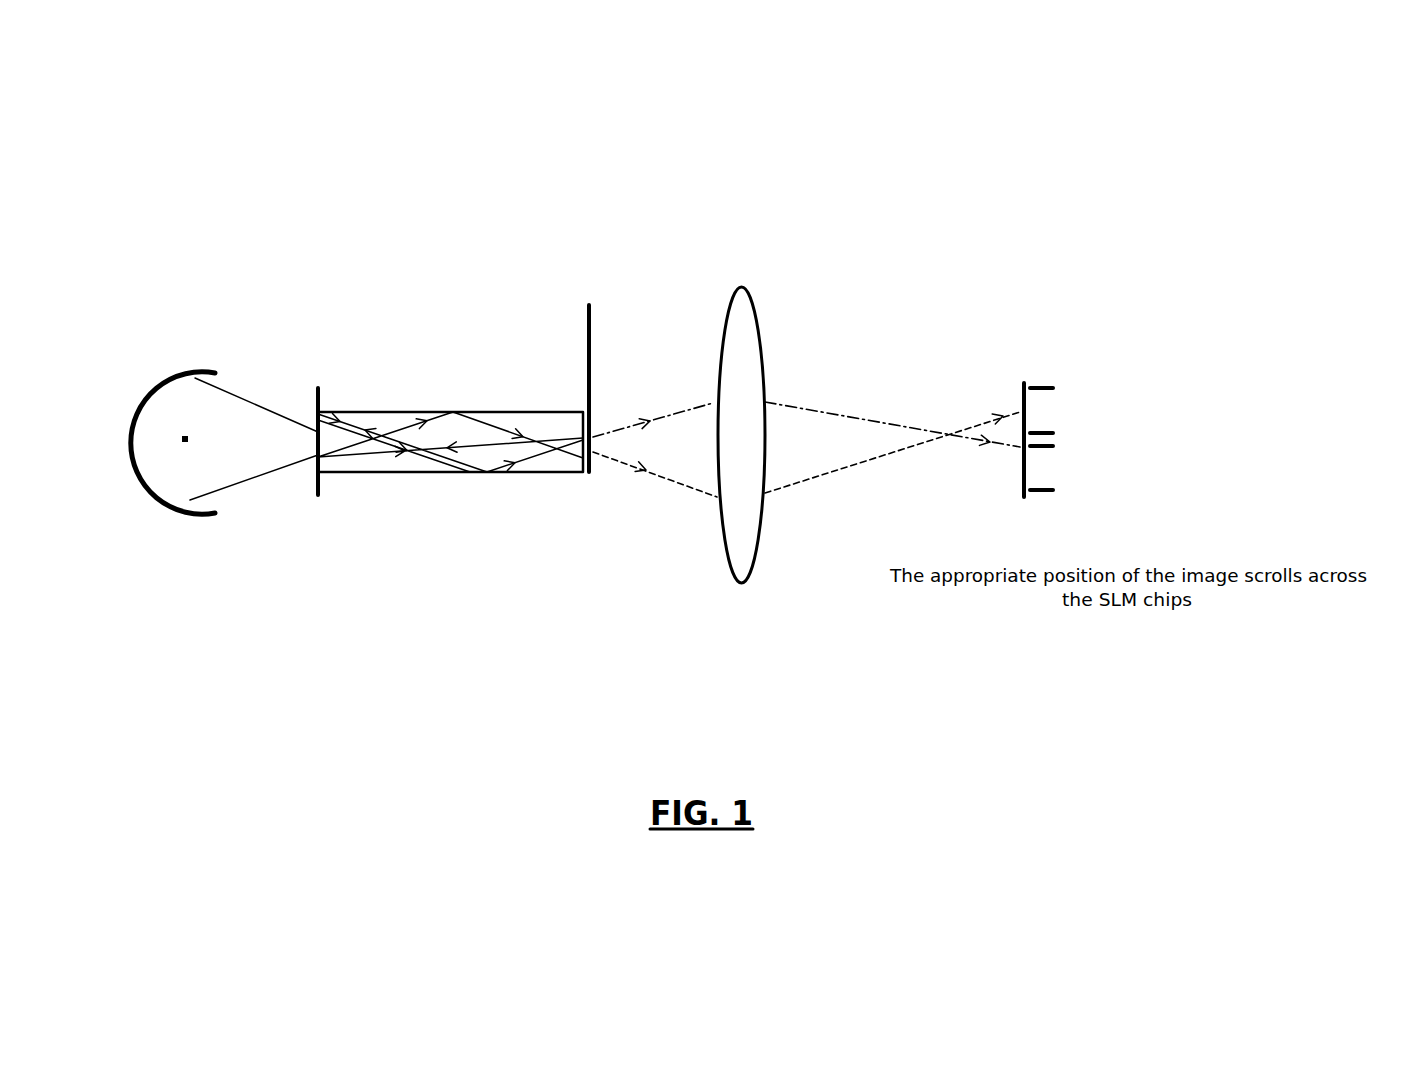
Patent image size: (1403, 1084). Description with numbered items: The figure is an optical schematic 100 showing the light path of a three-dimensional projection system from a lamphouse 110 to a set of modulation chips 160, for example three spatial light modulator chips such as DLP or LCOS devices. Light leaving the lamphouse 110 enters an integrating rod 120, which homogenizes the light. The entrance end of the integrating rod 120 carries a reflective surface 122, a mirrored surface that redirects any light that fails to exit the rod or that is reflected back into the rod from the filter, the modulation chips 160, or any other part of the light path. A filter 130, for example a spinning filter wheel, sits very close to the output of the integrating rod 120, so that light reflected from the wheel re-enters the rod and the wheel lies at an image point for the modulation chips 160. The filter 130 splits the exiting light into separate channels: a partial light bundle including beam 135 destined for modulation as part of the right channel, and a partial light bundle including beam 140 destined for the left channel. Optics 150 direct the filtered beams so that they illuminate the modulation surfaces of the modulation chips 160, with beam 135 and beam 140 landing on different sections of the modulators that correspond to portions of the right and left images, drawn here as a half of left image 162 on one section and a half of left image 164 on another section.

The optical schematic 100 is at (613, 603).
The lamphouse 110 is at (153, 349).
The integrating rod 120 is at (410, 376).
The reflective surface 122 is at (327, 373).
The filter 130 is at (593, 325).
The beam 135 is at (806, 406).
The beam 140 is at (806, 465).
The optics 150 is at (762, 445).
The modulation chips 160 is at (1032, 341).
The half of left image (upper SLM region) 162 is at (1050, 391).
The half of left image (lower SLM region) 164 is at (1070, 473).